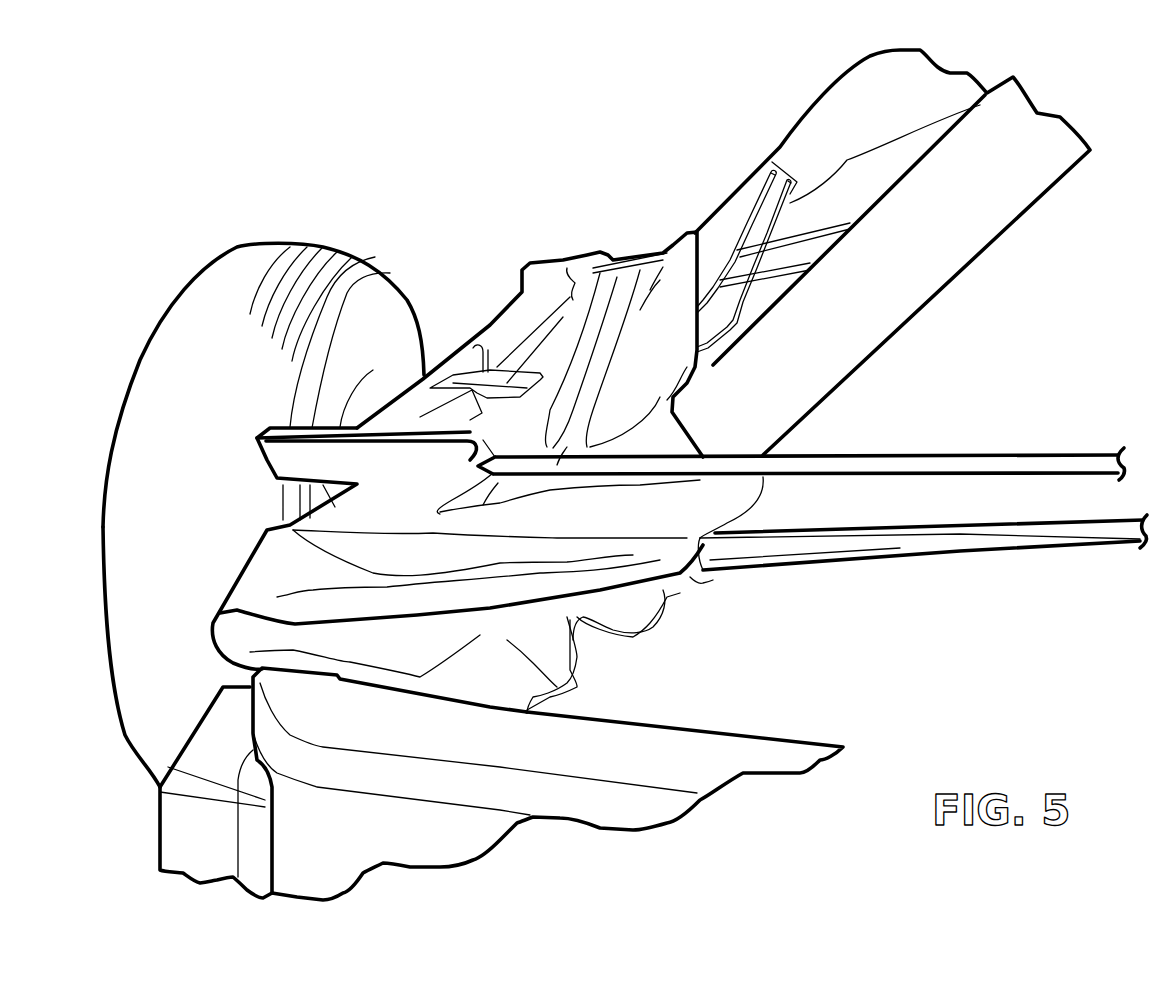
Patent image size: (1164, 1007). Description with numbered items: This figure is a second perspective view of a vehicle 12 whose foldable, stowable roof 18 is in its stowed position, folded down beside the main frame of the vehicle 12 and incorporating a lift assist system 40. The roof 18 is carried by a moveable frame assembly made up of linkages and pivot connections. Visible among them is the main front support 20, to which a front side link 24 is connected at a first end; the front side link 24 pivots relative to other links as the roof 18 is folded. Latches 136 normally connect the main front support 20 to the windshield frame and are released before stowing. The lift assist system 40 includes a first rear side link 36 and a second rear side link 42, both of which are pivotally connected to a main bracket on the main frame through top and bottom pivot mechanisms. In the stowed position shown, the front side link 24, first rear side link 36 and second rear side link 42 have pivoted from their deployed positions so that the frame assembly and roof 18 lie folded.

The vehicle 12 is at (636, 205).
The foldable, stowable roof 18 is at (653, 300).
The main front support 20 is at (507, 320).
The front side link 24 is at (555, 463).
The first rear side link 36 is at (740, 220).
The lift assist system 40 is at (790, 155).
The second rear side link 42 is at (768, 193).
The latches 136 is at (470, 363).